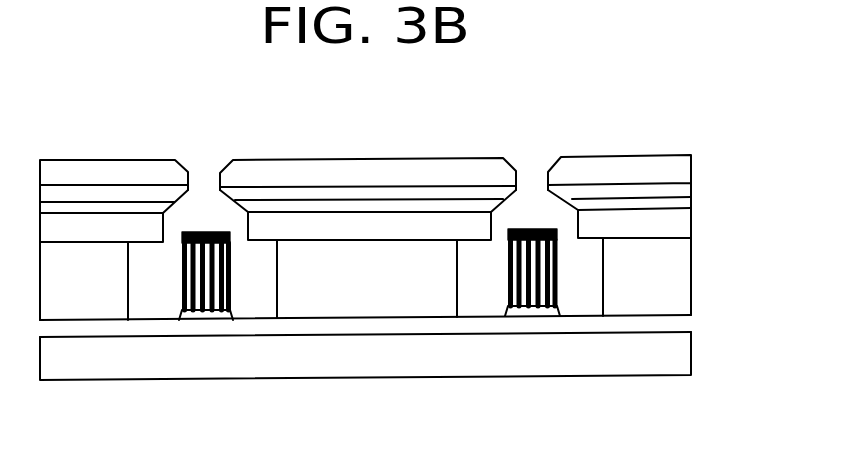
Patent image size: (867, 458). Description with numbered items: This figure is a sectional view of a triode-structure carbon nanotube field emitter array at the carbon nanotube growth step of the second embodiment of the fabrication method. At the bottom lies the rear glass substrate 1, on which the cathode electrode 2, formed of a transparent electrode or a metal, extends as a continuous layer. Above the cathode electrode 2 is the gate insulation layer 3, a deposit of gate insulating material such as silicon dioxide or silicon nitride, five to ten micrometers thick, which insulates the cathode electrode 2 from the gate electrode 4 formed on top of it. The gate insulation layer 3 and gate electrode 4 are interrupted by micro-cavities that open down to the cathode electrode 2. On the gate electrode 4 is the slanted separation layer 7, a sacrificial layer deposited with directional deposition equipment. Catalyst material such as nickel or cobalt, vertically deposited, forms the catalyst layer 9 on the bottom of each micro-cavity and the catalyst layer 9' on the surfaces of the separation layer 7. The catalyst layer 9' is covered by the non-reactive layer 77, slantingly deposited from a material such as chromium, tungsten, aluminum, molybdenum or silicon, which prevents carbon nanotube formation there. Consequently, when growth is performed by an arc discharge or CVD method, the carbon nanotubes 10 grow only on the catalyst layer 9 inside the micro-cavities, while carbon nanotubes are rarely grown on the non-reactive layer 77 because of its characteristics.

The rear glass substrate 1 is at (691, 360).
The cathode electrode 2 is at (691, 322).
The gate insulation layer 3 is at (691, 275).
The gate electrode 4 is at (691, 227).
The separation layer 7 is at (691, 205).
The catalyst layer 9 is at (369, 365).
The catalyst layer 9' is at (398, 198).
The carbon nanotubes 10 is at (205, 232).
The non-reactive layer 77 is at (398, 164).